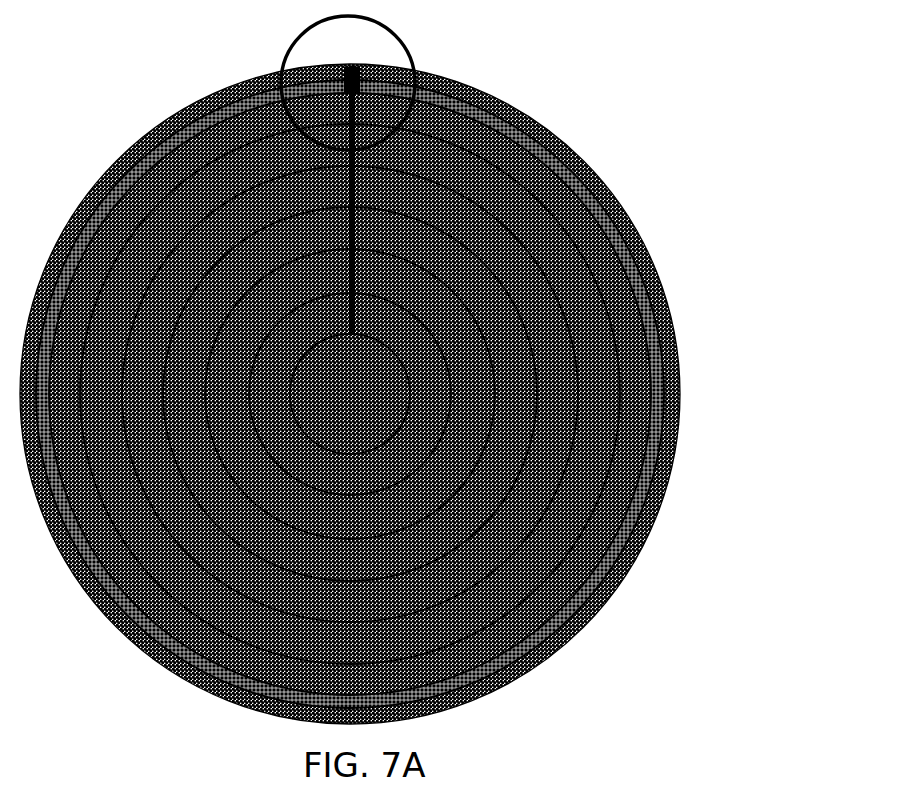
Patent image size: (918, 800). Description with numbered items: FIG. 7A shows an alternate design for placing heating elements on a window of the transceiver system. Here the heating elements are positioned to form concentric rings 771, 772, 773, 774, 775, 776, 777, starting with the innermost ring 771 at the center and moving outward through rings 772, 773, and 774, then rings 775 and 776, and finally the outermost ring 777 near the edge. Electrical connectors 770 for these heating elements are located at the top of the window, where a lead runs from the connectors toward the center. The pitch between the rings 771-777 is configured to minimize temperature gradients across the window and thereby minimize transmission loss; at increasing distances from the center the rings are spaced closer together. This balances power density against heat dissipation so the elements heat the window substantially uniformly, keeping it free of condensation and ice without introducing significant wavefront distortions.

The electrical connectors 770 is at (407, 62).
The concentric ring 771 is at (402, 428).
The concentric ring 772 is at (452, 393).
The concentric ring 773 is at (485, 358).
The concentric ring 774 is at (516, 319).
The concentric ring 775 is at (455, 597).
The concentric ring 776 is at (457, 640).
The concentric ring 777 is at (442, 695).